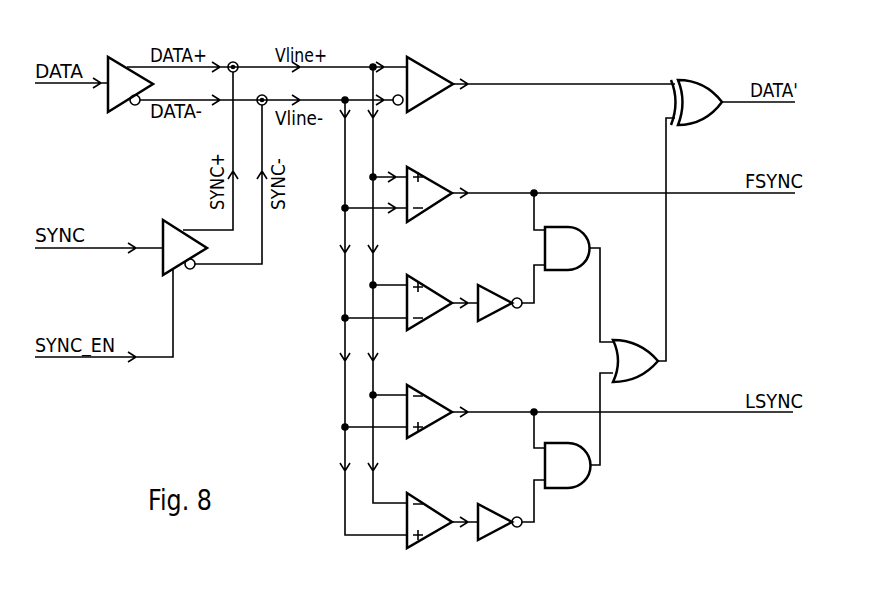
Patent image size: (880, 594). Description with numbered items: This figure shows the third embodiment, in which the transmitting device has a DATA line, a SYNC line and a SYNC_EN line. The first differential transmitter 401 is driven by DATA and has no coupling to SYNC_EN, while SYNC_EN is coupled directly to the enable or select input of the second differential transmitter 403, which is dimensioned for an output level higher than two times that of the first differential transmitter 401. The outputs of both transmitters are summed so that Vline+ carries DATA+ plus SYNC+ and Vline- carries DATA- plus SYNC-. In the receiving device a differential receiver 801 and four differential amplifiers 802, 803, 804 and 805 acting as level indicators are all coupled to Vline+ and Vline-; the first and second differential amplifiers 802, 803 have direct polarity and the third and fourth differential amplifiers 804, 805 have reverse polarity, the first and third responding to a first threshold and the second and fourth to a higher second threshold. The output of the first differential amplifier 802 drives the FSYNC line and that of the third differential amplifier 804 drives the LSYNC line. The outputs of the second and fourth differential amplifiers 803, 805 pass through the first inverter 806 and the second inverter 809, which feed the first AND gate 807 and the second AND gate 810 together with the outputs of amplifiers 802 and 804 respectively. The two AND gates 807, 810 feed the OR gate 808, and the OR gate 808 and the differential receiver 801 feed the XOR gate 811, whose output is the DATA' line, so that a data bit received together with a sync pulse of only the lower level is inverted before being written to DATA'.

The first differential transmitter 401 is at (116, 60).
The second differential transmitter 403 is at (170, 224).
The differential receiver 801 is at (419, 59).
The first differential amplifier 802 is at (419, 169).
The second differential amplifier 803 is at (419, 277).
The third differential amplifier 804 is at (419, 387).
The fourth differential amplifier 805 is at (419, 495).
The first inverter 806 is at (483, 285).
The first AND gate 807 is at (556, 270).
The OR gate 808 is at (626, 341).
The second inverter 809 is at (483, 504).
The second AND gate 810 is at (556, 488).
The XOR gate 811 is at (688, 80).